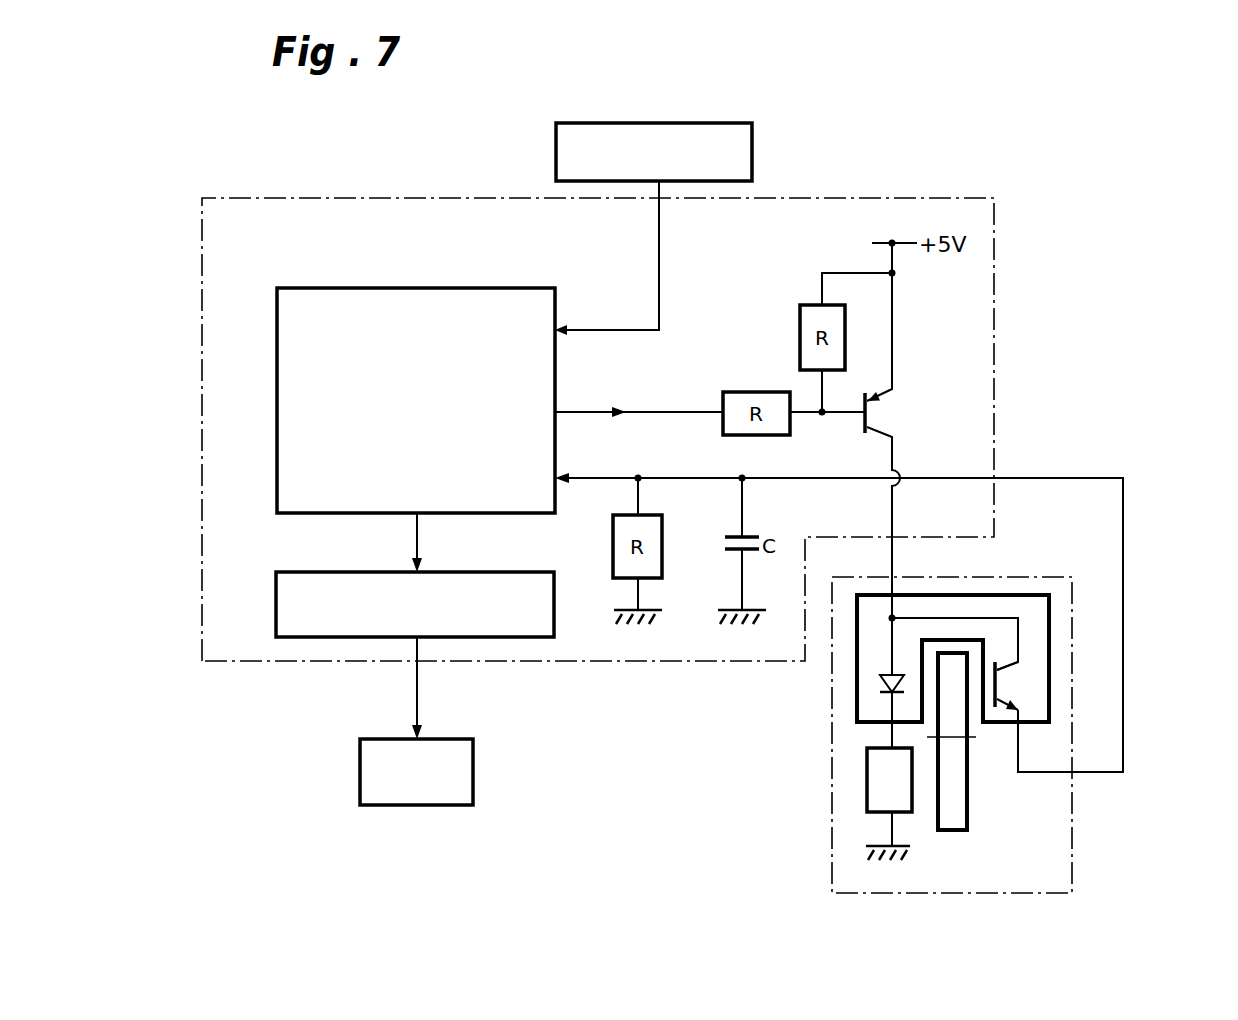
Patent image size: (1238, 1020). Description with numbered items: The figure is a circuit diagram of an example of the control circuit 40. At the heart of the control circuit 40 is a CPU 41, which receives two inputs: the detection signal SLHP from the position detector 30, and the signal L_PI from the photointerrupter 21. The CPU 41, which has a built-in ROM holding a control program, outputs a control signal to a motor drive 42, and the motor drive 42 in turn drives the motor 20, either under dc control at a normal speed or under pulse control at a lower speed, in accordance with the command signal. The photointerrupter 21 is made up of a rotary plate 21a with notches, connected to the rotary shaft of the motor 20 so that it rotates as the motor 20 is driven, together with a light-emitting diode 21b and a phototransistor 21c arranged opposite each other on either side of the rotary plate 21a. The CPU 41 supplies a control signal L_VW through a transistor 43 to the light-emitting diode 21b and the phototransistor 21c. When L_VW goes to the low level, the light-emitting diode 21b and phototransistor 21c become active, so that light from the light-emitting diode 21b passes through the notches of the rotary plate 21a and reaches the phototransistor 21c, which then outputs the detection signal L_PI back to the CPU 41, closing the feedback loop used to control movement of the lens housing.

The motor 20 is at (476, 762).
The photointerrupter 21 is at (1072, 862).
The rotary plate 21a is at (967, 808).
The light-emitting diode 21b is at (873, 688).
The phototransistor 21c is at (1005, 683).
The position detector 30 is at (752, 162).
The control circuit 40 is at (974, 198).
The CPU 41 is at (445, 288).
The motor drive 42 is at (500, 572).
The transistor 43 is at (880, 418).